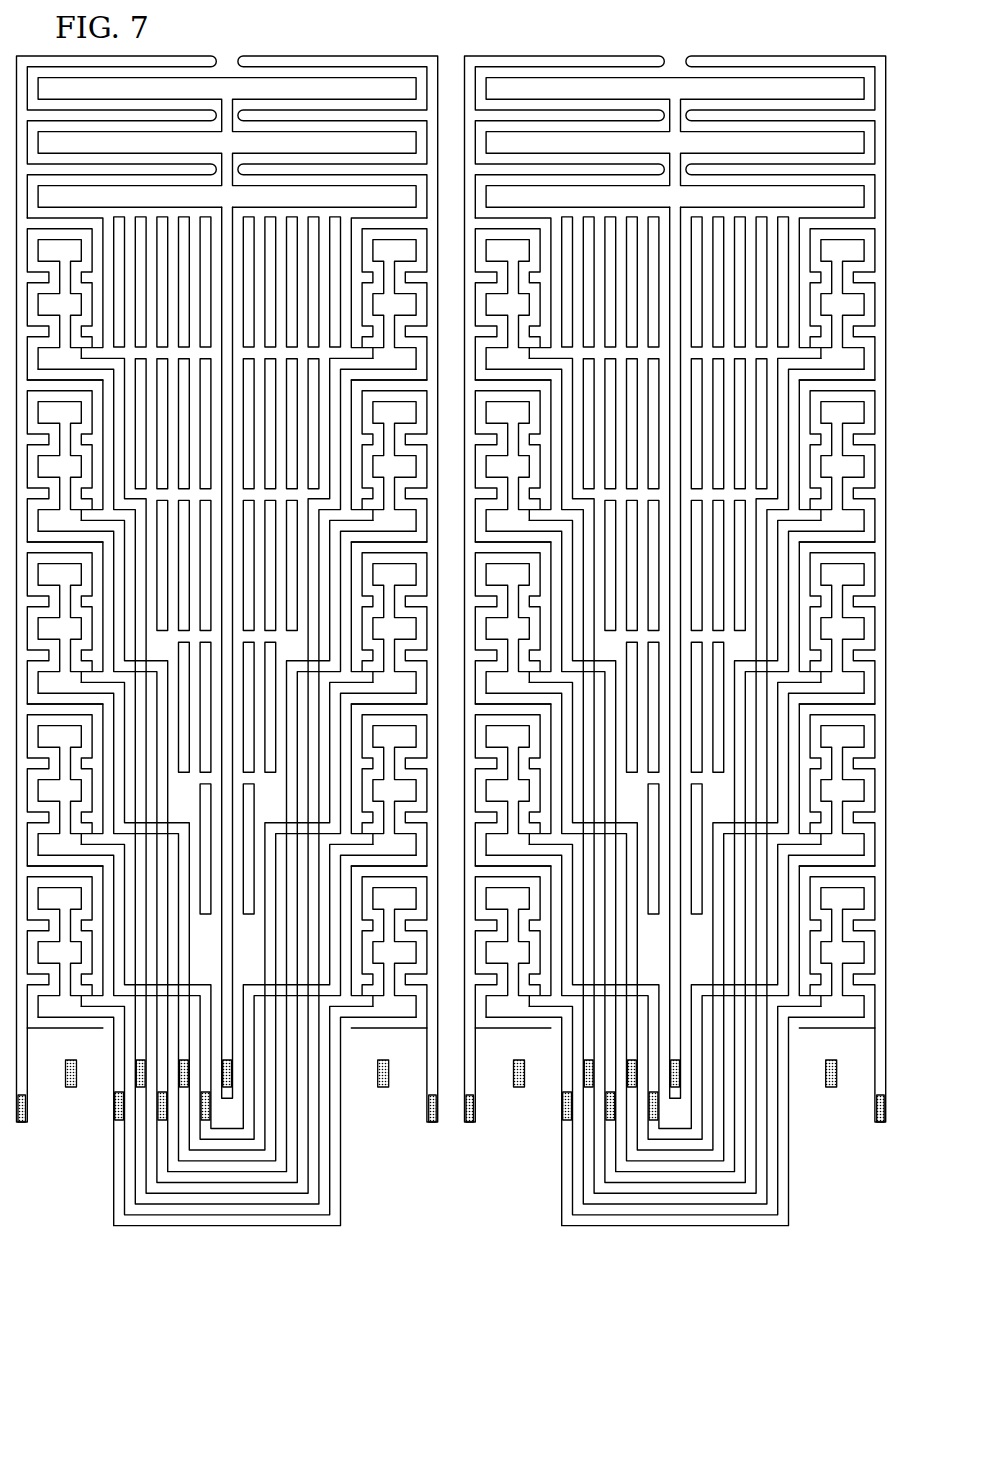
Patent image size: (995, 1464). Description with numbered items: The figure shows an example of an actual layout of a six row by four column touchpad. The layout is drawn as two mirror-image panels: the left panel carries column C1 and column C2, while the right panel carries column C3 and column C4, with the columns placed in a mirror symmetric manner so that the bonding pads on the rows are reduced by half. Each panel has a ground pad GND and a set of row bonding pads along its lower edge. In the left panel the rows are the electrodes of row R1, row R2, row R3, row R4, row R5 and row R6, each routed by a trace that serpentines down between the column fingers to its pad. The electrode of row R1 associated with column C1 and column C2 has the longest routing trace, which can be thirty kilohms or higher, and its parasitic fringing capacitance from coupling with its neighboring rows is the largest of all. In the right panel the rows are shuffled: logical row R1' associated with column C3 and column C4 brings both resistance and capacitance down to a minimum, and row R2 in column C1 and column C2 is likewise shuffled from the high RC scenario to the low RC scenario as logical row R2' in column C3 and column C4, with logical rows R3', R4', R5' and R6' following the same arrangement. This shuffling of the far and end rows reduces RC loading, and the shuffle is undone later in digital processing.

The column C1 is at (114, 605).
The column C2 is at (341, 605).
The column C3 is at (562, 605).
The column C4 is at (789, 605).
The ground GND is at (454, 1087).
The row R1 is at (201, 796).
The row R2 is at (227, 860).
The row R3 is at (227, 930).
The row R4 is at (227, 1000).
The row R5 is at (227, 1070).
The row R6 is at (227, 1140).
The logical row R1' is at (675, 1195).
The logical row R2' is at (675, 1103).
The logical row R3' is at (675, 1011).
The logical row R4' is at (675, 919).
The logical row R5' is at (675, 827).
The logical row R6' is at (703, 741).